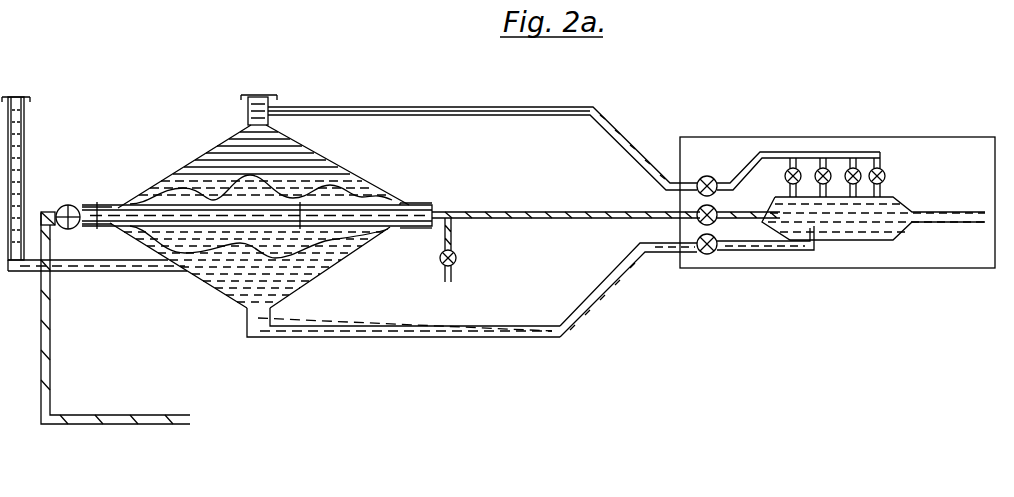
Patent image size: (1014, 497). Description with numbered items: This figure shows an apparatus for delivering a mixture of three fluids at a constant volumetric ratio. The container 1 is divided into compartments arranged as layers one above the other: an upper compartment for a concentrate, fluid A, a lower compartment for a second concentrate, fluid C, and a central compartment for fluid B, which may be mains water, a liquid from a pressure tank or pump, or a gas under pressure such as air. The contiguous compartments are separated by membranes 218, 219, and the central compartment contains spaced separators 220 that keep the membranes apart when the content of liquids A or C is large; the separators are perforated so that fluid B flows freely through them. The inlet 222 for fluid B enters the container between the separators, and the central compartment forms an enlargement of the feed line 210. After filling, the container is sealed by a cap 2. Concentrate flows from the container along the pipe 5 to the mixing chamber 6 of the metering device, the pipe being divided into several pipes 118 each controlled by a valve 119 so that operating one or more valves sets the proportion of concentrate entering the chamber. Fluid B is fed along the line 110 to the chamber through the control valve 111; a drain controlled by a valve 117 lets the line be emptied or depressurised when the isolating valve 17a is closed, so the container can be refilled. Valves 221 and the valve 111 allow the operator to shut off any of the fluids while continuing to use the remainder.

The cap 2 is at (16, 95).
The isolating valve 17a is at (66, 204).
The separators 220 is at (137, 210).
The inlet 222 is at (88, 199).
The container 1 is at (172, 178).
The fluid A is at (343, 174).
The fluid B is at (352, 235).
The fluid C is at (215, 262).
The membrane 218 is at (390, 203).
The membrane 219 is at (385, 228).
The line 110 is at (498, 207).
The drain valve 117 is at (440, 258).
The pipe 5 is at (622, 140).
The mixing chamber 6 is at (770, 204).
The valves 221 is at (712, 176).
The control valve 111 is at (700, 210).
The pipes 118 is at (850, 168).
The valve 119 is at (887, 171).
The feed line 210 is at (108, 416).